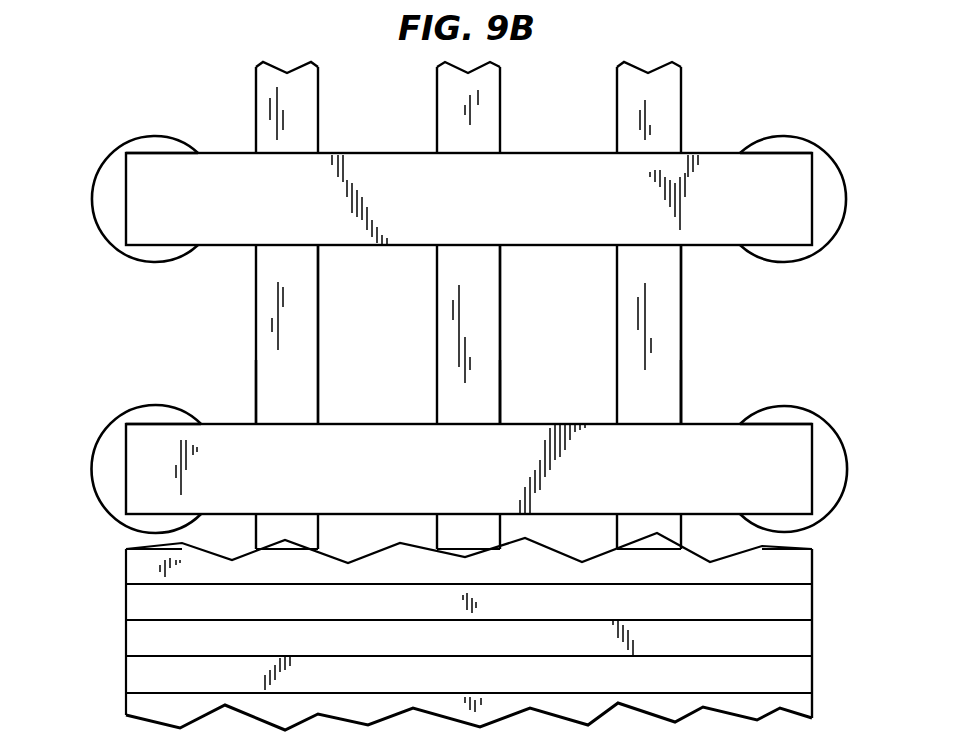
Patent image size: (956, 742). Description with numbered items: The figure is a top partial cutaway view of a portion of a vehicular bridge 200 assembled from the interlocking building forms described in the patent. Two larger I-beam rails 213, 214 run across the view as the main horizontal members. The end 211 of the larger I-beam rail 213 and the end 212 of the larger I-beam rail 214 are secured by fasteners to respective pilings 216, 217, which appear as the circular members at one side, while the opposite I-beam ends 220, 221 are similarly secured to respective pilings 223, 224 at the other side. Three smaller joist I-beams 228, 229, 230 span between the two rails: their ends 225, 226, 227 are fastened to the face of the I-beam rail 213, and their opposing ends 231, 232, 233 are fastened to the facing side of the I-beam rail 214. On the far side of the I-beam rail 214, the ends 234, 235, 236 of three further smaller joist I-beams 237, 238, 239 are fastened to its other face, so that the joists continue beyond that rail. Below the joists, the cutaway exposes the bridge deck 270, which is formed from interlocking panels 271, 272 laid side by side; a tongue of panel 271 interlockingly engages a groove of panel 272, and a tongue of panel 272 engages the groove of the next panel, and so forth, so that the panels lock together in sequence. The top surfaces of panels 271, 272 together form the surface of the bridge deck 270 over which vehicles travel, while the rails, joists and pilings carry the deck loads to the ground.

The vehicular bridge 200 is at (555, 153).
The end 211 is at (777, 163).
The end 212 is at (773, 432).
The larger I-beam rail 213 is at (378, 168).
The larger I-beam rail 214 is at (375, 440).
The piling 216 is at (832, 197).
The piling 217 is at (835, 470).
The I-beam end 220 is at (172, 163).
The I-beam end 221 is at (155, 430).
The piling 223 is at (102, 197).
The piling 224 is at (102, 467).
The end 225 is at (303, 310).
The end 226 is at (493, 280).
The end 227 is at (665, 280).
The smaller joist I-beam 228 is at (303, 280).
The smaller joist I-beam 229 is at (493, 310).
The smaller joist I-beam 230 is at (665, 310).
The opposing end 231 is at (278, 413).
The opposing end 232 is at (493, 410).
The opposing end 233 is at (663, 413).
The end 234 is at (272, 522).
The end 235 is at (452, 522).
The end 236 is at (633, 522).
The smaller joist I-beam 237 is at (298, 520).
The smaller joist I-beam 238 is at (478, 520).
The smaller joist I-beam 239 is at (670, 522).
The bridge deck 270 is at (810, 640).
The interlocking panel 271 is at (783, 645).
The interlocking panel 272 is at (803, 604).